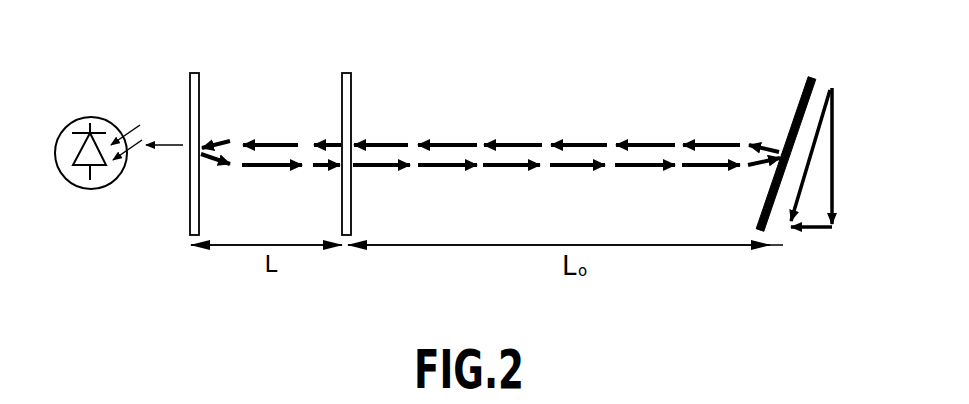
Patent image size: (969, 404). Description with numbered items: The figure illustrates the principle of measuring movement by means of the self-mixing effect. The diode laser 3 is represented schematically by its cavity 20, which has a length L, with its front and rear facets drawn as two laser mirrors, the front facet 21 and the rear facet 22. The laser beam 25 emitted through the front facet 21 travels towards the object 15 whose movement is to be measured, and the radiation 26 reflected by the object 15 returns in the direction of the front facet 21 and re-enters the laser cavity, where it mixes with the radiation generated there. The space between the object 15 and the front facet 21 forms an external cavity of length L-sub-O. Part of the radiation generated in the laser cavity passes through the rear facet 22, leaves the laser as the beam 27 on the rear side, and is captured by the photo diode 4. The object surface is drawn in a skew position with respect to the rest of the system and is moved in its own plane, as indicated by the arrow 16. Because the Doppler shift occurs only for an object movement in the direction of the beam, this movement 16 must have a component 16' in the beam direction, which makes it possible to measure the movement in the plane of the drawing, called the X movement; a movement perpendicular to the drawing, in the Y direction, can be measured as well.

The diode laser 3 is at (271, 30).
The photo diode 4 is at (85, 144).
The object 15 is at (795, 112).
The movement of the object surface 16 is at (770, 155).
The movement component in the beam direction 16' is at (811, 246).
The cavity 20 is at (280, 138).
The front facet 21 is at (348, 97).
The rear facet 22 is at (193, 93).
The laser beam 25 is at (542, 167).
The reflected radiation 26 is at (518, 140).
The light beam to photodetector 27 is at (173, 148).